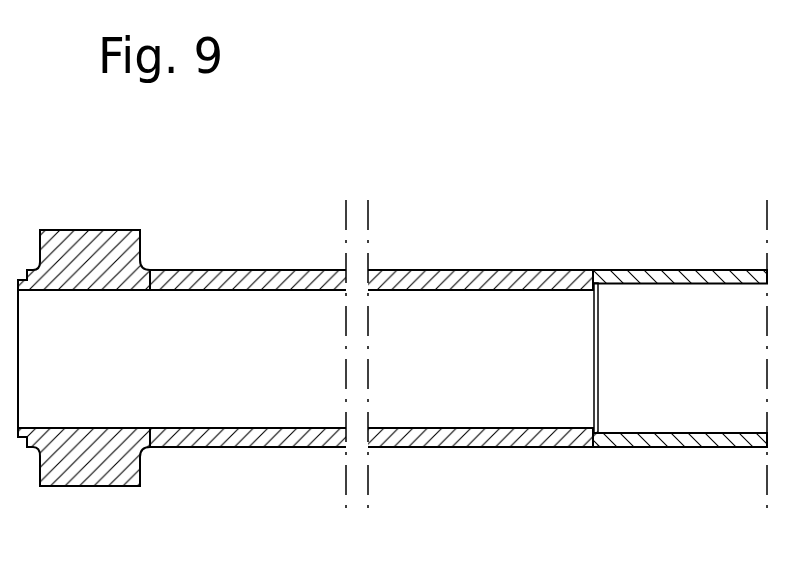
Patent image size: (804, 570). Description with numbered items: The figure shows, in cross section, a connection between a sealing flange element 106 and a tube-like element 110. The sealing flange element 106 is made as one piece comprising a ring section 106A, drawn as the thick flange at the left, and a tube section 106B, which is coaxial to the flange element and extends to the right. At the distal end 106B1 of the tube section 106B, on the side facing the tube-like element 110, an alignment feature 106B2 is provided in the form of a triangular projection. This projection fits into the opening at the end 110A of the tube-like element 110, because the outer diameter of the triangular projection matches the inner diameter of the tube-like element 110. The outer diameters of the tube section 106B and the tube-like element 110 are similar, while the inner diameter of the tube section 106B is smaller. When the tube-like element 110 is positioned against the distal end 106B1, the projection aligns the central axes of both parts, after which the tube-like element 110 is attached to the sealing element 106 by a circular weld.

The sealing flange element 106 is at (412, 232).
The ring section 106A is at (90, 262).
The tube section 106B is at (268, 269).
The distal end 106B1 is at (596, 434).
The alignment feature 106B2 is at (596, 431).
The tube-like element 110 is at (714, 269).
The end of the tube-like element 110A is at (594, 269).